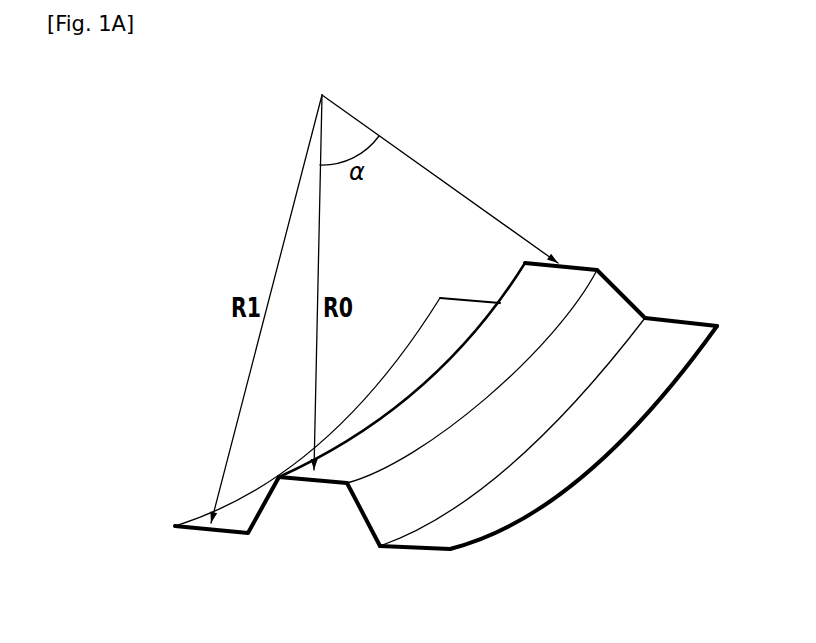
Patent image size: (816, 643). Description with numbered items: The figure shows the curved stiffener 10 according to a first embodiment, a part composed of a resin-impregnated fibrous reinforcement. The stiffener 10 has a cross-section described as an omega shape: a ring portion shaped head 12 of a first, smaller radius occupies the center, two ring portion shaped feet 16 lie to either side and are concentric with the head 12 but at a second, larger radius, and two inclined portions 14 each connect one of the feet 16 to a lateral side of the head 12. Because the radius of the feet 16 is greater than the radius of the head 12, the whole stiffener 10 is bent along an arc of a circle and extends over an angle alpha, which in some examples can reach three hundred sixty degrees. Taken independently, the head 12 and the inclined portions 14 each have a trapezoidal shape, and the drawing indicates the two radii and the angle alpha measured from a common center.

The curved stiffener 10 is at (446, 353).
The head 12 is at (517, 305).
The inclined portion 14 is at (408, 502).
The foot 16 is at (622, 420).